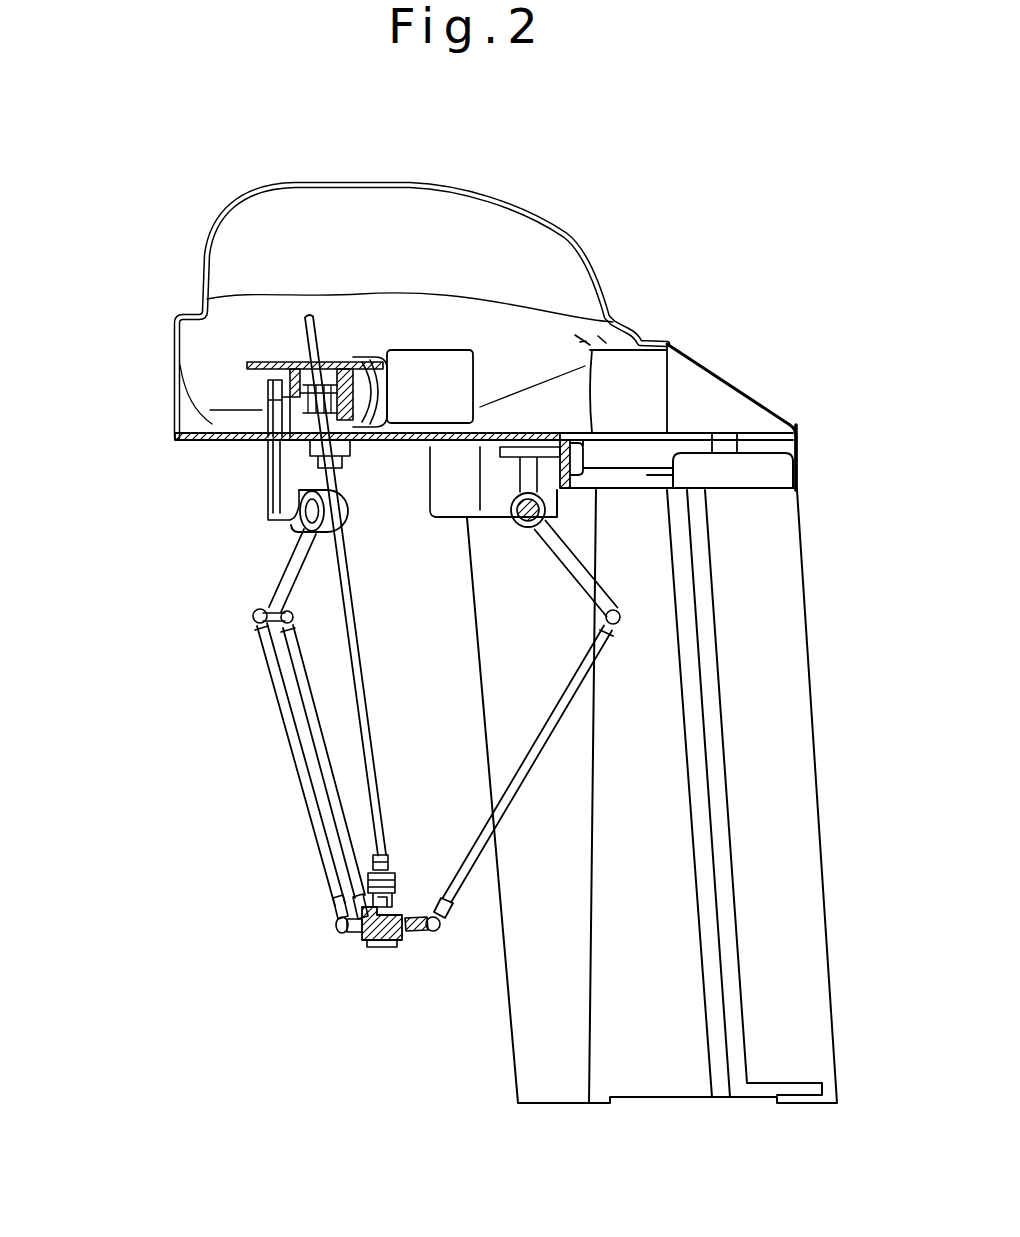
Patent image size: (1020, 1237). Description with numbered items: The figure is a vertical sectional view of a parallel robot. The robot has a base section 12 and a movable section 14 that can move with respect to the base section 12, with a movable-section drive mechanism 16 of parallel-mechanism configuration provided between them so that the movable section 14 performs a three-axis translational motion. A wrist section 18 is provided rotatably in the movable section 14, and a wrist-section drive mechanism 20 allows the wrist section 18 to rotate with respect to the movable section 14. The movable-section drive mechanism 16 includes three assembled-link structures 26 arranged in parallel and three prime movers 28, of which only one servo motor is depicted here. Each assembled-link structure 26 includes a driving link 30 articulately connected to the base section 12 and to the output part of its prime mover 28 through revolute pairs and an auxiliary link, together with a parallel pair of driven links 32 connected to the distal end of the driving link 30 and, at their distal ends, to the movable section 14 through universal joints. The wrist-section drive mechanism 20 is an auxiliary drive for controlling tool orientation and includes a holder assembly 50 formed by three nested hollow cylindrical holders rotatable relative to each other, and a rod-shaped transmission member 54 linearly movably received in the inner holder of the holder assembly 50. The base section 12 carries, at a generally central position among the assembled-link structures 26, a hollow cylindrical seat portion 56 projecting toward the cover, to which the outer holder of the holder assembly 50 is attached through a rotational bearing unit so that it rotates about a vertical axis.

The base section 12 is at (208, 428).
The movable section 14 is at (420, 935).
The movable-section drive mechanism 16 is at (272, 723).
The wrist section 18 is at (380, 948).
The wrist-section drive mechanism 20 is at (110, 463).
The assembled-link structure 26 is at (127, 587).
The prime mover 28 is at (437, 347).
The driving link 30 is at (268, 574).
The driven links 32 is at (262, 667).
The holder assembly 50 is at (297, 428).
The transmission member 54 is at (296, 483).
The seat portion 56 is at (262, 410).